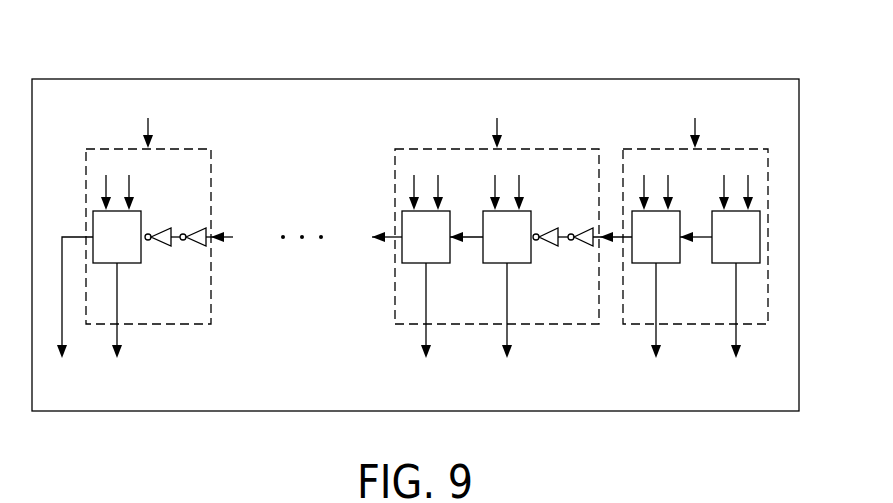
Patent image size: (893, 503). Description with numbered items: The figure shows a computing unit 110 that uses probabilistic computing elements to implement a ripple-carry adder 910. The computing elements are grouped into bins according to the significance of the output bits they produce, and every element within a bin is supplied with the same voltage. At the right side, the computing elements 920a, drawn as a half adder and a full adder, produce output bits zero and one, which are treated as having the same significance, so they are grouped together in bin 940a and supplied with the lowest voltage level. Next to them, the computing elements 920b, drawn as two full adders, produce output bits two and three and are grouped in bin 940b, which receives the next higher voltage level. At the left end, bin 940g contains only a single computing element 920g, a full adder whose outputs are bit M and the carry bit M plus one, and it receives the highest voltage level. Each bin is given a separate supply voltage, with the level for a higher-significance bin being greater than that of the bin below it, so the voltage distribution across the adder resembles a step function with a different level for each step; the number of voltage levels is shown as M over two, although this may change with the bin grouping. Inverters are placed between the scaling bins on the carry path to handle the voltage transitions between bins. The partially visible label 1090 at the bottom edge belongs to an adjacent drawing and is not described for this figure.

The computing unit 110 is at (680, 50).
The ripple-carry adder 910 is at (320, 160).
The bin 940g is at (137, 246).
The bin 940b is at (502, 246).
The bin 940a is at (675, 246).
The computing element 920g is at (142, 253).
The computing elements 920b is at (450, 254).
The computing elements 920a is at (680, 254).
The circuit (partial) 1090 is at (668, 501).